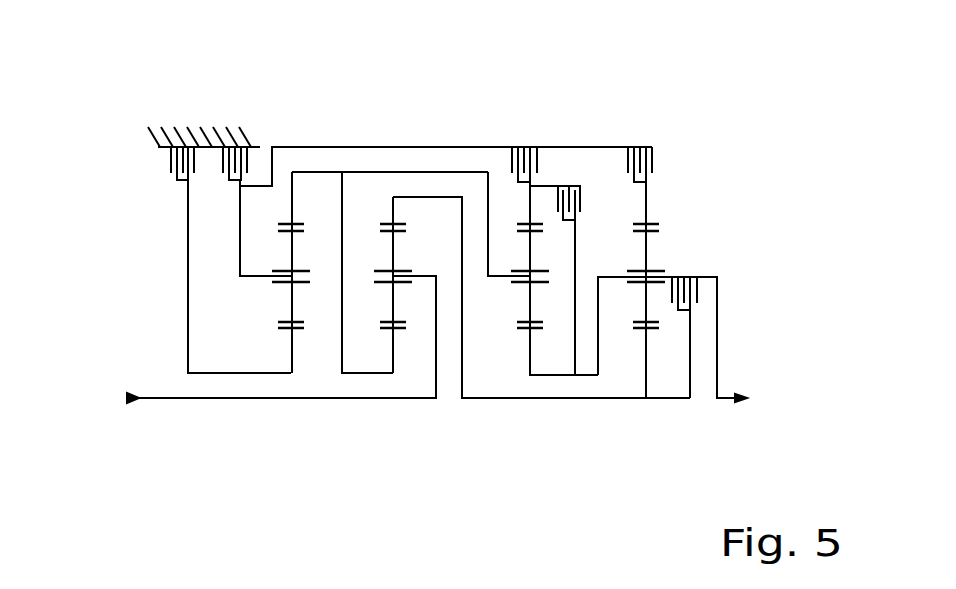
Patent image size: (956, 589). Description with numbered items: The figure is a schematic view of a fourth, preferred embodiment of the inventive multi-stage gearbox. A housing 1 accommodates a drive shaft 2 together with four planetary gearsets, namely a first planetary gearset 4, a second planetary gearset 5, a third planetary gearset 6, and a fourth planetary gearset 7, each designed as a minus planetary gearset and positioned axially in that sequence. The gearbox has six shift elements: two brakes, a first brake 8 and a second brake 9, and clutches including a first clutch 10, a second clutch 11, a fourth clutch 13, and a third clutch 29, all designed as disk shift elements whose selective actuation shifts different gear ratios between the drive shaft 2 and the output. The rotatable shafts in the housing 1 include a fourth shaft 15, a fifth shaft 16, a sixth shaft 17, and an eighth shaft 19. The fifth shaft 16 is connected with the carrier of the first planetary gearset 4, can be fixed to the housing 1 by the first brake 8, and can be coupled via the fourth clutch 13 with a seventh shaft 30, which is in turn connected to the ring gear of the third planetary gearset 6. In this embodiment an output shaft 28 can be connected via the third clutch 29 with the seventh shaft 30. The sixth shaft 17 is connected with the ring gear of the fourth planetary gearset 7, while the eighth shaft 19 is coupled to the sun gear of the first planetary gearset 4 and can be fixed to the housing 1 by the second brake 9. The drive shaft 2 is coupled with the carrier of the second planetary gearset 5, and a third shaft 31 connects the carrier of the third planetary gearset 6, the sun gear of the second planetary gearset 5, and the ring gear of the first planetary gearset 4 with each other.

The housing 1 is at (188, 147).
The drive shaft 2 is at (355, 400).
The first planetary gearset 4 is at (292, 130).
The second planetary gearset 5 is at (395, 130).
The third planetary gearset 6 is at (530, 130).
The fourth planetary gearset 7 is at (648, 130).
The first brake 8 is at (231, 163).
The second brake 9 is at (175, 163).
The first clutch 10 is at (685, 310).
The second clutch 11 is at (646, 165).
The fourth clutch 13 is at (520, 163).
The fourth shaft 15 is at (480, 400).
The fifth shaft 16 is at (363, 147).
The sixth shaft 17 is at (647, 197).
The eighth shaft 19 is at (187, 312).
The output shaft 28 is at (715, 357).
The third clutch 29 is at (573, 192).
The seventh shaft 30 is at (547, 185).
The third shaft 31 is at (318, 172).